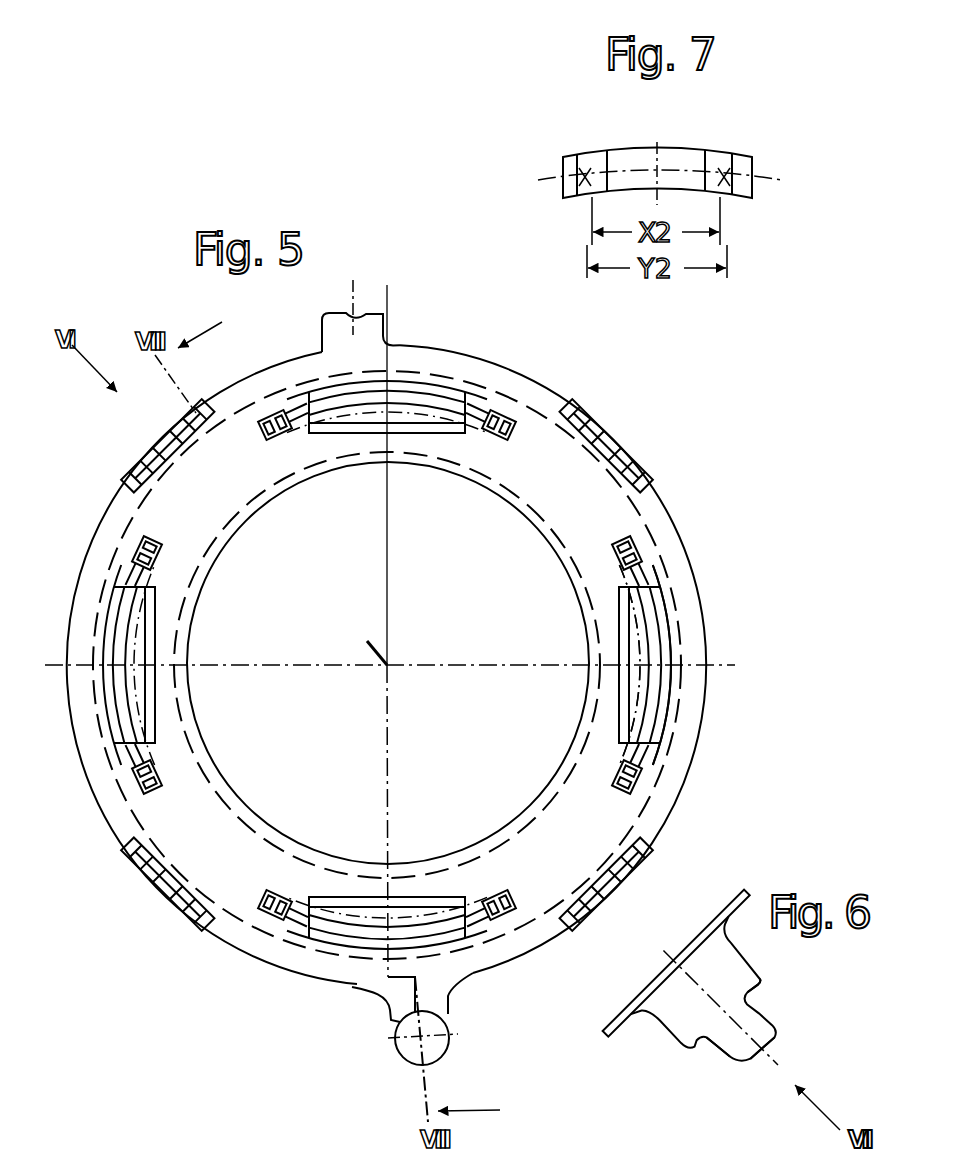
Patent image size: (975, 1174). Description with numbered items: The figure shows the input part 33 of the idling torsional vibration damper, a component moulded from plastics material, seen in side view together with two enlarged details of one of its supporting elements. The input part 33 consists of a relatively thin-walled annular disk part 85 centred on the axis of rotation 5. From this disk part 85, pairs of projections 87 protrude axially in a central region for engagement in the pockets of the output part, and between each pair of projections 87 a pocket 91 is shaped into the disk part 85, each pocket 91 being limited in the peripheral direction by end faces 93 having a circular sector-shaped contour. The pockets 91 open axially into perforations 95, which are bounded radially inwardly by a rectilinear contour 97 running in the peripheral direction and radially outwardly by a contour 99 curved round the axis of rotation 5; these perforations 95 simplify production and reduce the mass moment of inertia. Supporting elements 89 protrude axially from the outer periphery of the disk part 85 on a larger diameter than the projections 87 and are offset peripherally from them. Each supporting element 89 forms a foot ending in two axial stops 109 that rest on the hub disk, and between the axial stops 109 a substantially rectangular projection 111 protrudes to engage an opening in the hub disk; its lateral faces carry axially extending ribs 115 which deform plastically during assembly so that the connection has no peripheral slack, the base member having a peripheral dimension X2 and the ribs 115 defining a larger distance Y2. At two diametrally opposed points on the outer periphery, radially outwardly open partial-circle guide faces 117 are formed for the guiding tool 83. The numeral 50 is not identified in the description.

In FIG. 5, the axis of rotation 5 is at (392, 660).
In FIG. 5, the input part 33 is at (688, 486).
In FIG. 5, the inner carrier contour 50 is at (498, 492).
In FIG. 5, the guiding tool 83 is at (402, 1045).
In FIG. 5, the annular disk part 85 is at (207, 872).
In FIG. 5, the projections 87 is at (637, 550).
In FIG. 5, the supporting elements 89 is at (137, 461).
In FIG. 6, the supporting elements 89 is at (655, 1022).
In FIG. 7, the supporting elements 89 is at (627, 146).
In FIG. 5, the pockets 91 is at (426, 382).
In FIG. 5, the end faces 93 is at (645, 588).
In FIG. 5, the perforations 95 is at (647, 653).
In FIG. 5, the contour 97 is at (630, 708).
In FIG. 5, the contour 99 is at (650, 683).
In FIG. 6, the axial stops 109 is at (763, 985).
In FIG. 7, the axial stops 109 is at (577, 196).
In FIG. 6, the projections 111 is at (750, 1057).
In FIG. 7, the projections 111 is at (678, 163).
In FIG. 7, the ribs 115 is at (577, 156).
In FIG. 5, the guide faces 117 is at (362, 313).